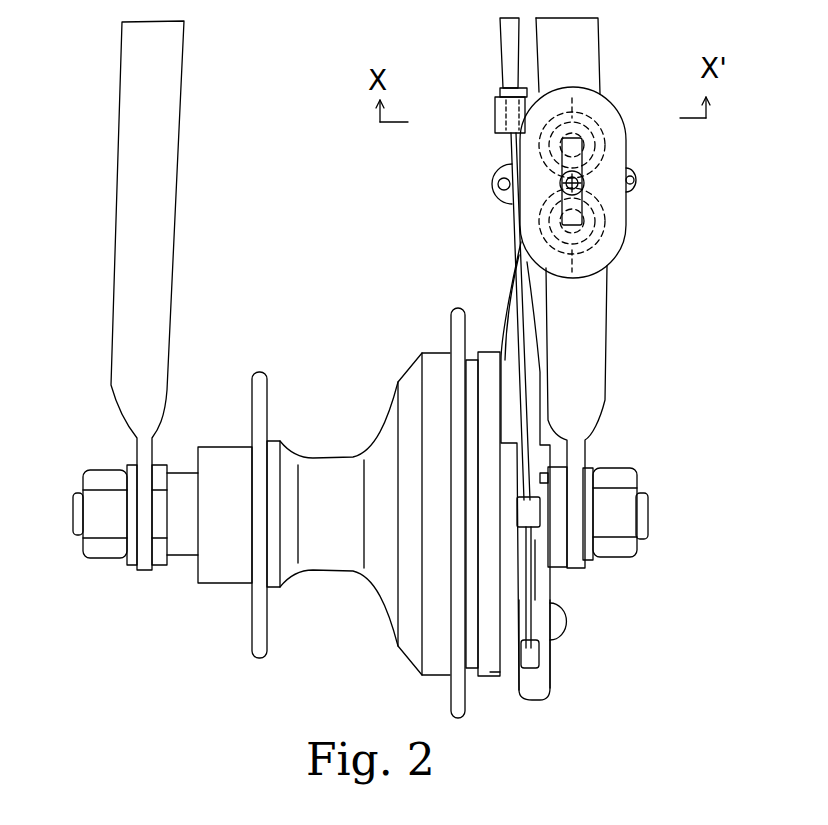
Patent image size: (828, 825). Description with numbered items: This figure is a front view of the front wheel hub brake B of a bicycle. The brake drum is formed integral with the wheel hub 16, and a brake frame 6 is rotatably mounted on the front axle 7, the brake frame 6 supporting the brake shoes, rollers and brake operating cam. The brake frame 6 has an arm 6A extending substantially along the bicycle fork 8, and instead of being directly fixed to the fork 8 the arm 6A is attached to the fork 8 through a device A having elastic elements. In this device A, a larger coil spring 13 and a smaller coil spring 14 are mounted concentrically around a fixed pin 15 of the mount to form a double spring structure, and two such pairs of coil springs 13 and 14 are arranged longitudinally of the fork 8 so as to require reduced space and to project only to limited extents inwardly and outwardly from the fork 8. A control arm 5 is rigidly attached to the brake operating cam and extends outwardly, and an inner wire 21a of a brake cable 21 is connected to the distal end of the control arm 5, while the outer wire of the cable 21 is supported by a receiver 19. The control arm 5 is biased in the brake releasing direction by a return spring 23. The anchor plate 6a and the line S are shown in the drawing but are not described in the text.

The control arm 5 is at (537, 583).
The brake frame 6 is at (514, 411).
The arm 6A is at (507, 305).
The cable anchor plate 6a is at (625, 212).
The front axle 7 is at (73, 512).
The bicycle fork 8 is at (128, 95).
The coil spring 13 is at (615, 100).
The coil spring 14 is at (568, 97).
The fixed pin 15 is at (573, 156).
The wheel hub 16 is at (397, 380).
The receiver 19 is at (494, 117).
The brake cable 21 is at (497, 58).
The inner wire 21a is at (522, 350).
The return spring 23 is at (535, 658).
The device having elastic elements A is at (635, 235).
The hub brake B is at (497, 683).
The slit S is at (522, 157).